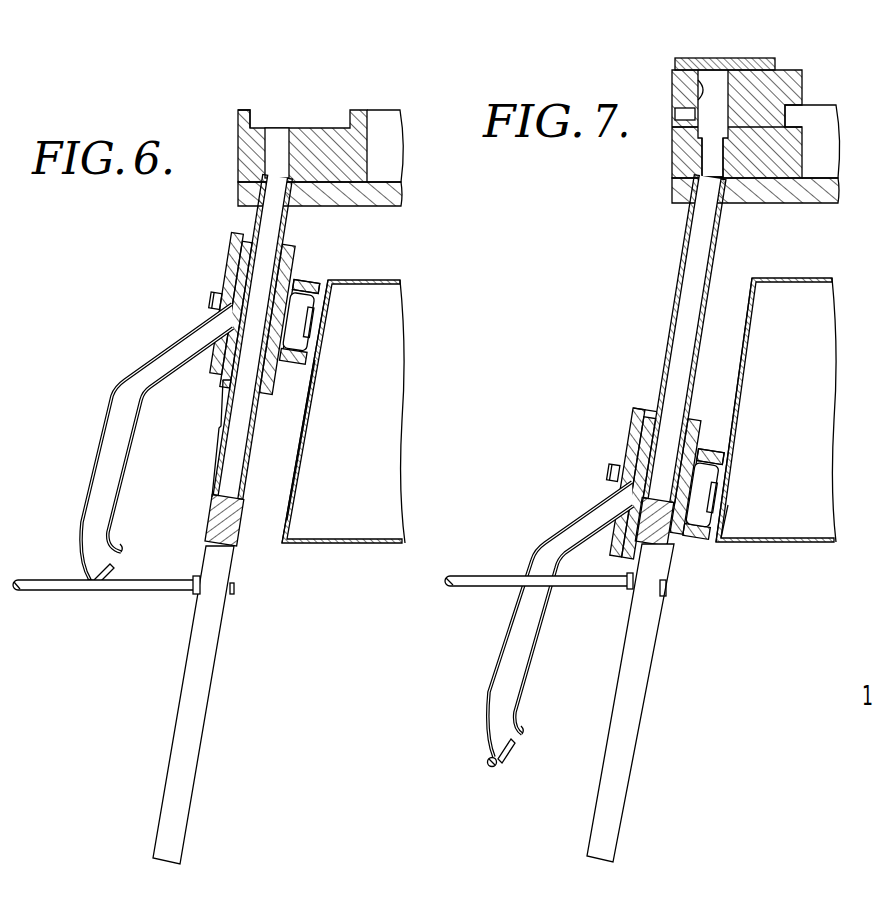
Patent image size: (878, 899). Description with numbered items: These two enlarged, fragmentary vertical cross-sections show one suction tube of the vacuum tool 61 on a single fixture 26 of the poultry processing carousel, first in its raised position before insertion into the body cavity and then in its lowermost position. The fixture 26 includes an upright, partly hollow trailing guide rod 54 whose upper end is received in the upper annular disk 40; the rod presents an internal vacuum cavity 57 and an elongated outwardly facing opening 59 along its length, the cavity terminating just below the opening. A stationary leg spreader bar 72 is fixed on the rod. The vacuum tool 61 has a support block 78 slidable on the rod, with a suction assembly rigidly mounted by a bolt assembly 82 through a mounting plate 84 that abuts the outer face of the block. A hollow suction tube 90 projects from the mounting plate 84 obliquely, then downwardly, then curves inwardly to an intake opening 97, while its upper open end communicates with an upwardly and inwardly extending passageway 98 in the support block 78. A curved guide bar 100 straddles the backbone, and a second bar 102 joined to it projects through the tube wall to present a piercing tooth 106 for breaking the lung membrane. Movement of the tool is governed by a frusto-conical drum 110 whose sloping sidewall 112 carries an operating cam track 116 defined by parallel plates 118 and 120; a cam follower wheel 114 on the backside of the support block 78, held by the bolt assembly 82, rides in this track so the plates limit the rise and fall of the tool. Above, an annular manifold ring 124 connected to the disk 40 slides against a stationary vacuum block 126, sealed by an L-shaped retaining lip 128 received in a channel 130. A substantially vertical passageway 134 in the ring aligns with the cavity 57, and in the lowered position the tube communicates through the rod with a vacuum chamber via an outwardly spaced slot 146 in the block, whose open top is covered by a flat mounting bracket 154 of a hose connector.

In FIG. 6, the fixture 26 is at (240, 570).
In FIG. 7, the fixture 26 is at (662, 656).
In FIG. 6, the upper annular disk 40 is at (400, 194).
In FIG. 7, the upper annular disk 40 is at (812, 202).
In FIG. 6, the trailing guide rod 54 is at (198, 745).
In FIG. 7, the trailing guide rod 54 is at (616, 790).
In FIG. 6, the vacuum cavity 57 is at (266, 230).
In FIG. 7, the vacuum cavity 57 is at (698, 258).
In FIG. 6, the elongated opening 59 is at (221, 463).
In FIG. 7, the elongated opening 59 is at (636, 412).
In FIG. 6, the vacuum tool 61 is at (218, 257).
In FIG. 7, the vacuum tool 61 is at (616, 443).
In FIG. 6, the leg spreader bar 72 is at (158, 592).
In FIG. 7, the leg spreader bar 72 is at (470, 586).
In FIG. 6, the support block 78 is at (269, 388).
In FIG. 7, the support block 78 is at (698, 430).
In FIG. 6, the bolt assembly 82 is at (208, 297).
In FIG. 7, the bolt assembly 82 is at (610, 474).
In FIG. 6, the mounting plate 84 is at (207, 377).
In FIG. 7, the mounting plate 84 is at (606, 559).
In FIG. 6, the suction tube 90 is at (116, 408).
In FIG. 7, the suction tube 90 is at (534, 651).
In FIG. 6, the intake opening 97 is at (128, 548).
In FIG. 7, the intake opening 97 is at (534, 733).
In FIG. 6, the passageway 98 is at (225, 323).
In FIG. 7, the passageway 98 is at (625, 503).
In FIG. 6, the guide bar 100 is at (86, 576).
In FIG. 7, the guide bar 100 is at (489, 753).
In FIG. 6, the second bar 102 is at (104, 594).
In FIG. 7, the second bar 102 is at (501, 770).
In FIG. 6, the piercing tooth 106 is at (104, 578).
In FIG. 7, the piercing tooth 106 is at (516, 753).
In FIG. 6, the drum 110 is at (392, 280).
In FIG. 7, the drum 110 is at (808, 278).
In FIG. 6, the sidewall 112 is at (290, 483).
In FIG. 7, the sidewall 112 is at (750, 318).
In FIG. 6, the cam follower wheel 114 is at (306, 298).
In FIG. 7, the cam follower wheel 114 is at (722, 482).
In FIG. 6, the cam track 116 is at (333, 263).
In FIG. 7, the cam track 116 is at (699, 565).
In FIG. 6, the plate 118 is at (322, 262).
In FIG. 7, the plate 118 is at (726, 455).
In FIG. 6, the plate 120 is at (310, 372).
In FIG. 7, the plate 120 is at (712, 542).
In FIG. 6, the manifold ring 124 is at (393, 128).
In FIG. 7, the manifold ring 124 is at (828, 143).
In FIG. 6, the vacuum block 126 is at (302, 146).
In FIG. 7, the vacuum block 126 is at (787, 71).
In FIG. 6, the retaining lip 128 is at (250, 117).
In FIG. 7, the retaining lip 128 is at (789, 106).
In FIG. 7, the channel 130 is at (678, 113).
In FIG. 6, the vertical passageway 134 is at (278, 148).
In FIG. 7, the vertical passageway 134 is at (707, 166).
In FIG. 7, the slot 146 is at (700, 88).
In FIG. 7, the mounting bracket 154 is at (727, 59).